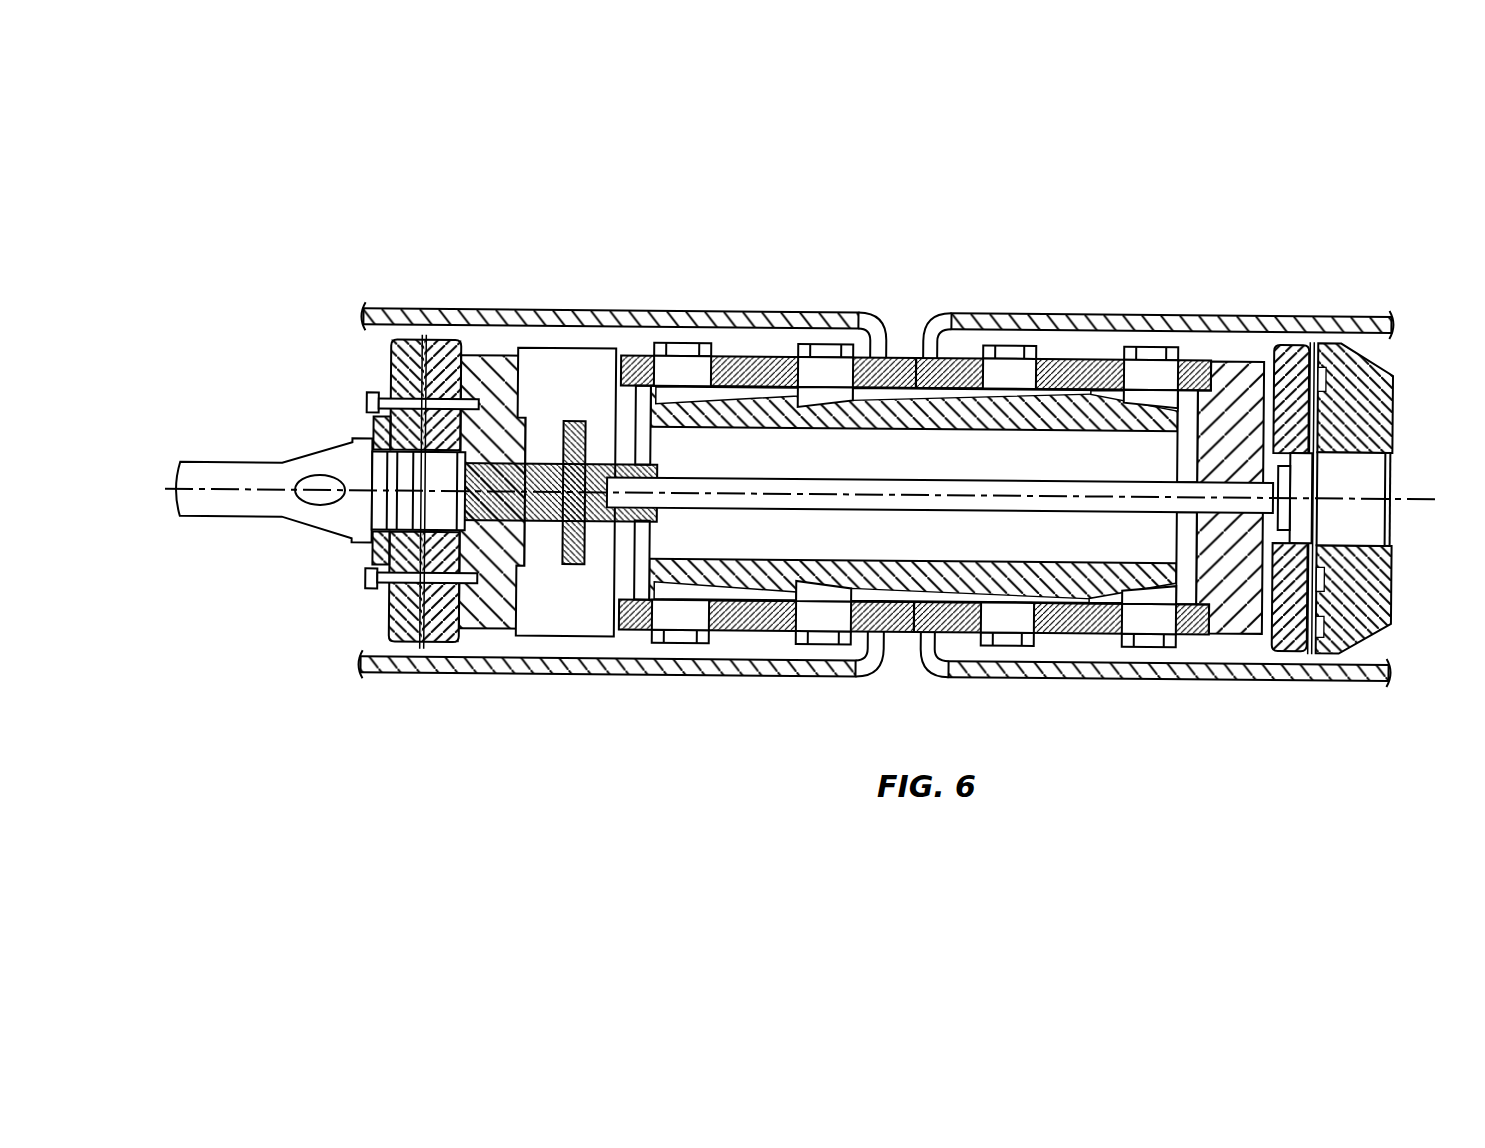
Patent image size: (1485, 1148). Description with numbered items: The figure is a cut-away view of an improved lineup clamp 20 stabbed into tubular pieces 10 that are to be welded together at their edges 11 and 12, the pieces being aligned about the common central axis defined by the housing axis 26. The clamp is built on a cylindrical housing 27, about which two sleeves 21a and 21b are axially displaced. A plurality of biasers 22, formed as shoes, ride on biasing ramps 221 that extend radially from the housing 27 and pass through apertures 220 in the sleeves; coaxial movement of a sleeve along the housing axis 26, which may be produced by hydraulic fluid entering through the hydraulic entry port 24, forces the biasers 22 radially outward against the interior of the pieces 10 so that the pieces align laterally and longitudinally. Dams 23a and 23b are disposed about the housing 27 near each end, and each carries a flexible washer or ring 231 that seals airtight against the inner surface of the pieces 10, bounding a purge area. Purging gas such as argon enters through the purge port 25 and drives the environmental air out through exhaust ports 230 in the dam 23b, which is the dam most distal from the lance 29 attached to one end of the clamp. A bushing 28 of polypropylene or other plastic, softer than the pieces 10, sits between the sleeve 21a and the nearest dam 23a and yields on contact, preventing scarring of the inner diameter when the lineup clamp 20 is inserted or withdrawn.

The pieces to be welded 10 is at (732, 320).
The edge 11 is at (862, 313).
The edge 12 is at (948, 318).
The lineup clamp 20 is at (877, 693).
The sleeve 21a is at (893, 390).
The sleeve 21b is at (1057, 363).
The biaser 22 is at (681, 348).
The aperture 220 is at (683, 375).
The biasing ramp 221 is at (1163, 403).
The dam 23a is at (390, 358).
The dam 23b is at (1287, 350).
The exhaust port 230 is at (1335, 625).
The flexible washer or ring 231 is at (423, 340).
The hydraulic entry port 24 is at (366, 404).
The purge port 25 is at (366, 575).
The housing axis 26 is at (827, 494).
The housing 27 is at (983, 420).
The bushing 28 is at (585, 370).
The lance 29 is at (260, 505).